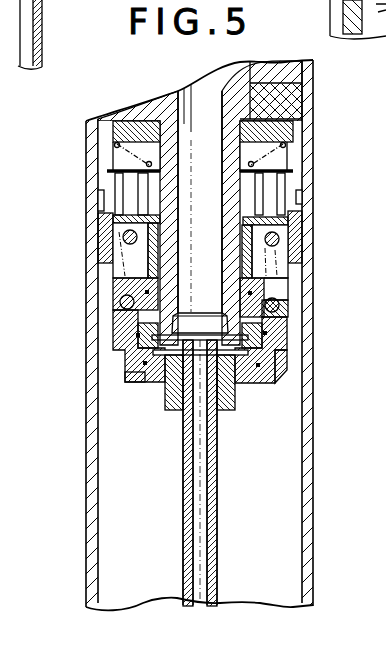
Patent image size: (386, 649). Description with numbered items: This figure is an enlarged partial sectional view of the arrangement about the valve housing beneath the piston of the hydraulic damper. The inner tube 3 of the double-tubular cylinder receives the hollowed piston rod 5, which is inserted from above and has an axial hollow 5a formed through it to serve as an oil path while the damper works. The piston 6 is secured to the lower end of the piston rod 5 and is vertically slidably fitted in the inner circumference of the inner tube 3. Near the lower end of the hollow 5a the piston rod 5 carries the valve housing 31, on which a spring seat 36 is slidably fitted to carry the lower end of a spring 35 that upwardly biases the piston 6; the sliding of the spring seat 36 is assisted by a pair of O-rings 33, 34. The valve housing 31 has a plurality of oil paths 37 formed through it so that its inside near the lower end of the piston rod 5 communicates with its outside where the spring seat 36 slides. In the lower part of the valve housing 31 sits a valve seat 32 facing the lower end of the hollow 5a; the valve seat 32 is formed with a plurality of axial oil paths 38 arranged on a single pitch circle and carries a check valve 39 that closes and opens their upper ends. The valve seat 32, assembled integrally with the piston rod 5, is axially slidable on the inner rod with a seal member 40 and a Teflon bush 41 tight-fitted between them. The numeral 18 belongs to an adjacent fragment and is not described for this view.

The inner tube 3 is at (309, 521).
The piston rod 5 is at (232, 187).
The axial hollow 5a is at (142, 362).
The piston 6 is at (105, 220).
The housing member 18 is at (42, 4).
The valve housing 31 is at (146, 358).
The valve seat 32 is at (150, 382).
The O-ring 33 is at (140, 302).
The O-ring 34 is at (134, 333).
The spring 35 is at (100, 248).
The spring seat 36 is at (122, 316).
The oil paths 37 is at (284, 314).
The axial oil paths 38 is at (243, 384).
The check valve 39 is at (286, 354).
The seal member 40 is at (181, 384).
The Teflon bush 41 is at (163, 372).